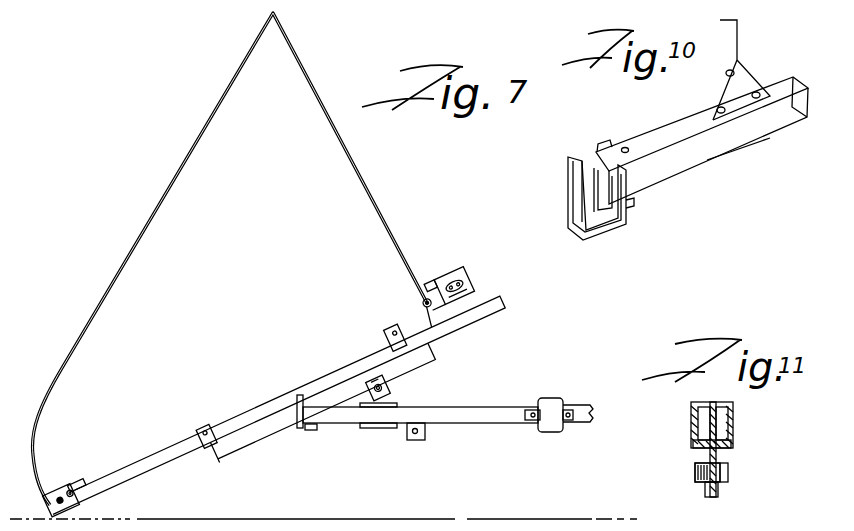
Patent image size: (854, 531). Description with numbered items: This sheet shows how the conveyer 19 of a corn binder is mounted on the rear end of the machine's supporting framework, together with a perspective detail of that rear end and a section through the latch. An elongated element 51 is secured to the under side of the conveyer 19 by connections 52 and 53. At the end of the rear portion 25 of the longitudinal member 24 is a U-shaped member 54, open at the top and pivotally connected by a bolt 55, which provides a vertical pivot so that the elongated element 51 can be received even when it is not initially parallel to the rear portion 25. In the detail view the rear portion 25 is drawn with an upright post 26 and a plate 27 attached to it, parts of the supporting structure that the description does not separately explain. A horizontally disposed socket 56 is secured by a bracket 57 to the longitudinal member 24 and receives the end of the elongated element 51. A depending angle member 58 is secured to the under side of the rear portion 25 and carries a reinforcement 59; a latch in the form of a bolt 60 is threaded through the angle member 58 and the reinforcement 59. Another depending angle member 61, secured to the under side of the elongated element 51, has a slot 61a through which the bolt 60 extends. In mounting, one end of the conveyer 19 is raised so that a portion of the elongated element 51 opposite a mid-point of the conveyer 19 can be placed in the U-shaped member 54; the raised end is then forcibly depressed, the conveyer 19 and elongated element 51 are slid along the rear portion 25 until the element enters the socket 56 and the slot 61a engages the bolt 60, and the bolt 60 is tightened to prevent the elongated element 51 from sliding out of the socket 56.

In FIG. 7, the conveyer 19 is at (373, 197).
In FIG. 7, the longitudinal member 24 is at (582, 405).
In FIG. 7, the rear portion of the longitudinal member 25 is at (483, 412).
In FIG. 10, the rear portion of the longitudinal member 25 is at (683, 167).
In FIG. 11, the rear portion of the longitudinal member 25 is at (693, 417).
In FIG. 10, the post 26 is at (733, 33).
In FIG. 7, the mounting plate 27 is at (366, 429).
In FIG. 10, the mounting plate 27 is at (728, 90).
In FIG. 7, the elongated element 51 is at (462, 330).
In FIG. 11, the elongated element 51 is at (733, 415).
In FIG. 7, the connection 52 is at (212, 452).
In FIG. 7, the connection 53 is at (403, 339).
In FIG. 7, the U-shaped member 54 is at (296, 430).
In FIG. 10, the U-shaped member 54 is at (607, 230).
In FIG. 7, the bolt 55 is at (311, 431).
In FIG. 10, the bolt 55 is at (600, 143).
In FIG. 7, the horizontally disposed socket 56 is at (552, 407).
In FIG. 7, the bracket 57 is at (570, 424).
In FIG. 7, the depending angle member 58 is at (426, 436).
In FIG. 11, the depending angle member 58 is at (710, 497).
In FIG. 11, the reinforcement 59 is at (706, 483).
In FIG. 7, the bolt 60 is at (416, 434).
In FIG. 11, the bolt 60 is at (728, 472).
In FIG. 7, the depending angle member 61 is at (387, 392).
In FIG. 11, the depending angle member 61 is at (716, 453).
In FIG. 7, the slot 61a is at (386, 383).